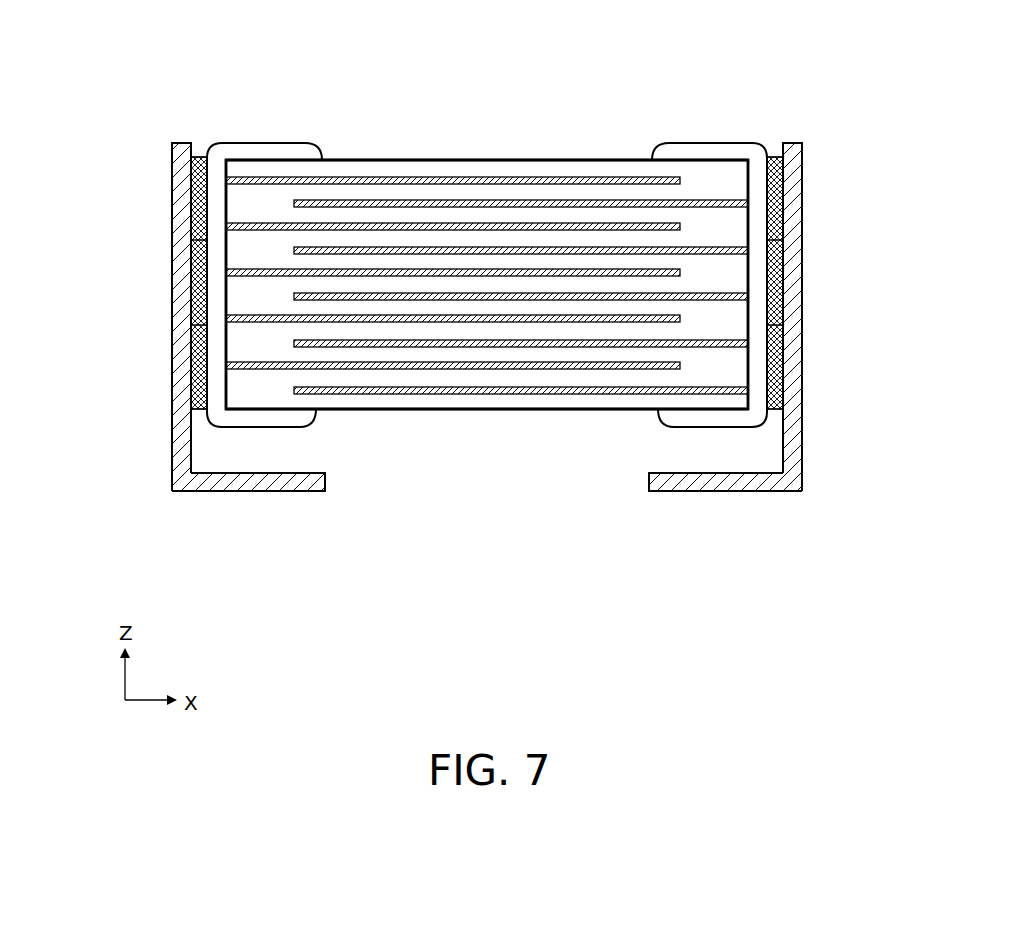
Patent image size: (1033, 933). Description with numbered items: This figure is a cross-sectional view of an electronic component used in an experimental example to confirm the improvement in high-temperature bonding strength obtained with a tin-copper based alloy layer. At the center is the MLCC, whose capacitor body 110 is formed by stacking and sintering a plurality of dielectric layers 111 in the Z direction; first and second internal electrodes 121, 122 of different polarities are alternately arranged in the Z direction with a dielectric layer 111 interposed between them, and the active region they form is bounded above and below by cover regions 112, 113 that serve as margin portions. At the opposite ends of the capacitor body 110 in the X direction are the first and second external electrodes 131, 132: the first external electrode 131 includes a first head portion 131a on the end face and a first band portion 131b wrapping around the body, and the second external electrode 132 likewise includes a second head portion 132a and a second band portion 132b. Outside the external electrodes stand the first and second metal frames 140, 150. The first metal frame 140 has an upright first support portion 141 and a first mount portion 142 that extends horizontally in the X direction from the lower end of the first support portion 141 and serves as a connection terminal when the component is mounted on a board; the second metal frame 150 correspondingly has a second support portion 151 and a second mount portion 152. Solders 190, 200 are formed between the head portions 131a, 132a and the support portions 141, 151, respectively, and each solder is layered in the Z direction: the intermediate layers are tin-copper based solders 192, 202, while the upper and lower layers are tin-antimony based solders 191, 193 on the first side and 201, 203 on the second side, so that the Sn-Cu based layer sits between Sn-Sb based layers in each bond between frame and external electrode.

The capacitor body 110 is at (490, 160).
The dielectric layers 111 is at (553, 213).
The cover region 112 is at (418, 170).
The cover region 113 is at (517, 400).
The first internal electrode 121 is at (349, 178).
The second internal electrode 122 is at (610, 203).
The first external electrode 131 is at (237, 233).
The first head portion 131a is at (180, 248).
The first band portion 131b is at (275, 143).
The second external electrode 132 is at (737, 233).
The second head portion 132a is at (788, 150).
The second band portion 132b is at (700, 143).
The first metal frame 140 is at (223, 370).
The first support portion 141 is at (173, 445).
The first mount portion 142 is at (248, 511).
The second metal frame 150 is at (751, 370).
The second support portion 151 is at (793, 445).
The second mount portion 152 is at (725, 511).
The solder 190 is at (118, 283).
The tin-antimony based solder 191 is at (176, 212).
The tin-copper based solder 192 is at (176, 300).
The tin-antimony based solder 193 is at (152, 367).
The solder 200 is at (856, 283).
The tin-antimony based solder 201 is at (798, 212).
The tin-copper based solder 202 is at (798, 300).
The tin-antimony based solder 203 is at (822, 367).